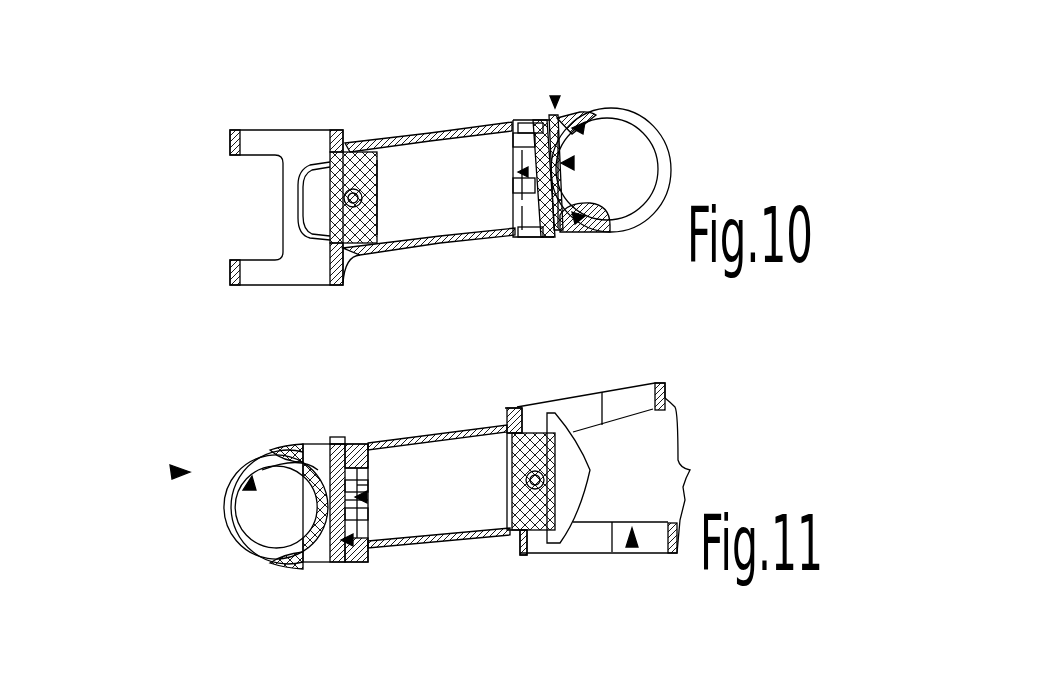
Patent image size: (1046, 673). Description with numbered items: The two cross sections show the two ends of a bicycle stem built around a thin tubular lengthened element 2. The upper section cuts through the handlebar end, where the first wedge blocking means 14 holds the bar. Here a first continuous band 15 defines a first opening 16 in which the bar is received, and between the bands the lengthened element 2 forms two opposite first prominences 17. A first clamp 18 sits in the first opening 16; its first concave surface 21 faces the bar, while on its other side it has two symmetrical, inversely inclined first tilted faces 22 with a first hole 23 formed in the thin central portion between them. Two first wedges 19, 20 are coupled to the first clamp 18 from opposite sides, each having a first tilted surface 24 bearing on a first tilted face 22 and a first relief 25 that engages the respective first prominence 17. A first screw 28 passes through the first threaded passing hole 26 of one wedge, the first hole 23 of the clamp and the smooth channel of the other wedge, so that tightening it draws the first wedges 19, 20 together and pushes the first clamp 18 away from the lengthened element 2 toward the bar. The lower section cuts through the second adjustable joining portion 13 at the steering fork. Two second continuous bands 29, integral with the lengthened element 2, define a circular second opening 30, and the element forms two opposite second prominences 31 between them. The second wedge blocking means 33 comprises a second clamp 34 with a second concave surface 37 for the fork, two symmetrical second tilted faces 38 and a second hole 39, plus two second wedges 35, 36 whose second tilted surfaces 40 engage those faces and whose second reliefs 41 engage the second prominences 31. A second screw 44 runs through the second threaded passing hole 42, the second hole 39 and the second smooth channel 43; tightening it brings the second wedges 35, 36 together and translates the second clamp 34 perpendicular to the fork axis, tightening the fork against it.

In FIG. 10, the lengthened element 2 is at (435, 132).
In FIG. 11, the lengthened element 2 is at (418, 442).
In FIG. 11, the second adjustable joining portion 13 is at (175, 472).
In FIG. 10, the first wedge blocking means 14 is at (556, 96).
In FIG. 10, the first continuous band 15 is at (633, 113).
In FIG. 11, the first continuous band 15 is at (625, 468).
In FIG. 11, the first opening 16 is at (632, 550).
In FIG. 10, the first prominence 17 is at (512, 123).
In FIG. 10, the first clamp 18 is at (620, 236).
In FIG. 11, the first clamp 18 is at (552, 532).
In FIG. 10, the first wedge 19 is at (560, 240).
In FIG. 10, the first wedge 20 is at (518, 172).
In FIG. 10, the first concave surface 21 is at (574, 163).
In FIG. 10, the first tilted face 22 is at (560, 115).
In FIG. 10, the first hole 23 is at (512, 205).
In FIG. 10, the first tilted surface 24 is at (584, 128).
In FIG. 10, the first relief 25 is at (520, 127).
In FIG. 10, the first threaded passing hole 26 is at (515, 215).
In FIG. 10, the first screw 28 is at (232, 268).
In FIG. 10, the second continuous band 29 is at (232, 143).
In FIG. 11, the second continuous band 29 is at (235, 533).
In FIG. 11, the second opening 30 is at (253, 447).
In FIG. 11, the second prominence 31 is at (367, 444).
In FIG. 10, the second wedge blocking means 33 is at (198, 0).
In FIG. 11, the second clamp 34 is at (297, 517).
In FIG. 11, the second wedge 35 is at (366, 497).
In FIG. 11, the second wedge 36 is at (337, 472).
In FIG. 11, the second concave surface 37 is at (280, 444).
In FIG. 11, the second tilted face 38 is at (315, 444).
In FIG. 11, the second hole 39 is at (367, 485).
In FIG. 10, the second tilted surface 40 is at (310, 0).
In FIG. 11, the second tilted surface 40 is at (338, 437).
In FIG. 10, the second relief 41 is at (348, 0).
In FIG. 11, the second relief 41 is at (363, 565).
In FIG. 11, the second threaded passing hole 42 is at (352, 540).
In FIG. 10, the second smooth channel 43 is at (380, 0).
In FIG. 11, the second screw 44 is at (380, 444).